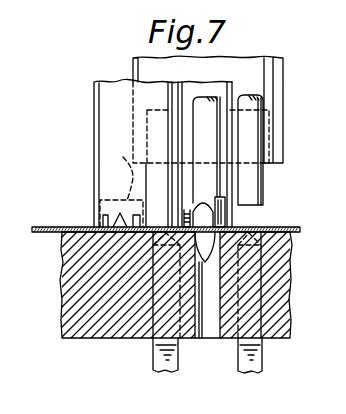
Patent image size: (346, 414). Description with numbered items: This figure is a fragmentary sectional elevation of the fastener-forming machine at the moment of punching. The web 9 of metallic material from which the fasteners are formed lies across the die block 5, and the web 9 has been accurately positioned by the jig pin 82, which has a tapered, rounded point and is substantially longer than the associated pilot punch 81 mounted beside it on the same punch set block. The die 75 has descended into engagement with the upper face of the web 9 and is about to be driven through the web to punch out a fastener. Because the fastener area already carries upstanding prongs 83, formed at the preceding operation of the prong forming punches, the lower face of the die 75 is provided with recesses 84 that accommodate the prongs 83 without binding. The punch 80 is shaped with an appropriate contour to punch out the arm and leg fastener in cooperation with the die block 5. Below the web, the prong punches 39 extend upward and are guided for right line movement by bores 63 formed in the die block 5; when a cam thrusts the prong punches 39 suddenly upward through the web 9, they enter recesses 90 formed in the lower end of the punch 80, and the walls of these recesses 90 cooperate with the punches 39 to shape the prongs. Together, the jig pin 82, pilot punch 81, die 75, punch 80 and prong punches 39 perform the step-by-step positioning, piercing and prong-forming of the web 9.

The die block 5 is at (67, 284).
The web 9 is at (44, 227).
The prong punches 39 is at (238, 355).
The bores 63 is at (261, 322).
The die 75 is at (100, 140).
The punch 80 is at (285, 77).
The pilot punch 81 is at (248, 186).
The jig pin 82 is at (208, 94).
The upstanding prongs 83 is at (119, 212).
The recesses 84 is at (118, 173).
The recesses 90 is at (147, 133).